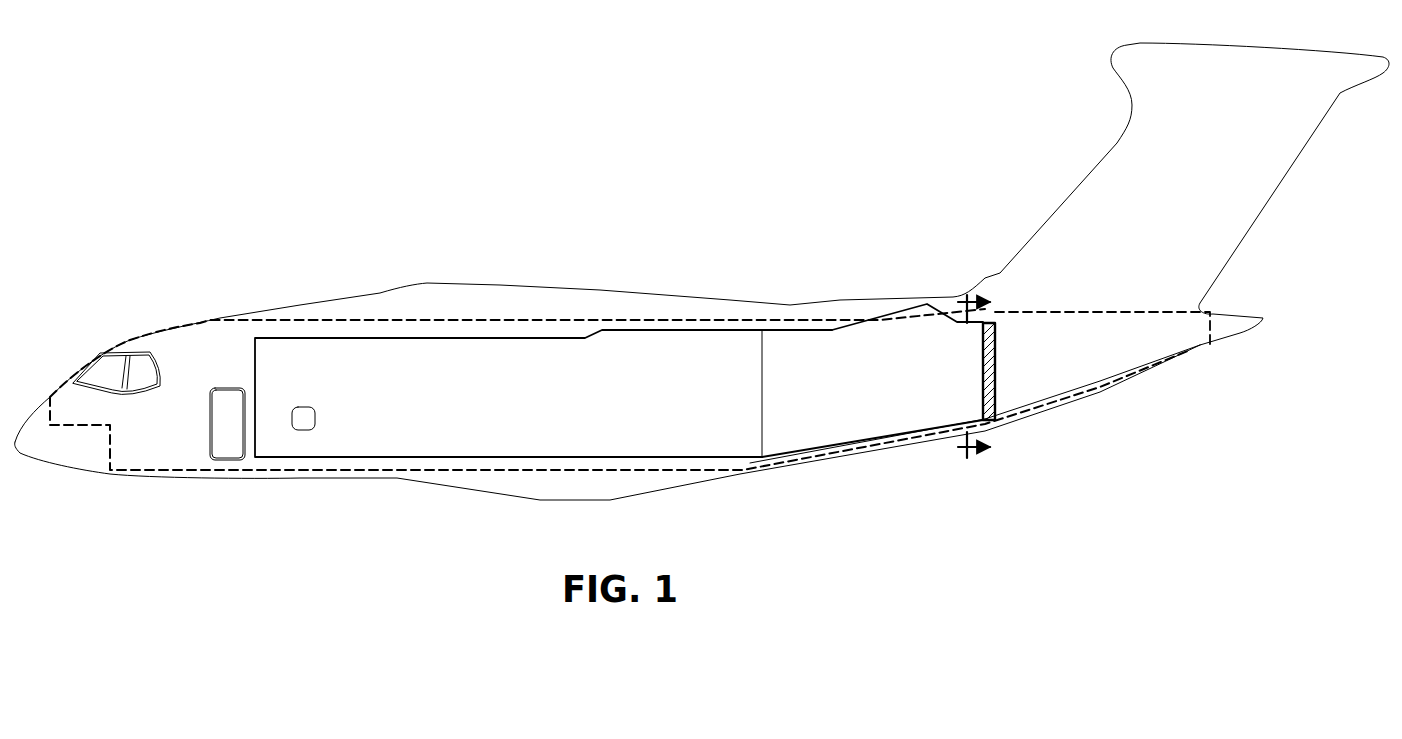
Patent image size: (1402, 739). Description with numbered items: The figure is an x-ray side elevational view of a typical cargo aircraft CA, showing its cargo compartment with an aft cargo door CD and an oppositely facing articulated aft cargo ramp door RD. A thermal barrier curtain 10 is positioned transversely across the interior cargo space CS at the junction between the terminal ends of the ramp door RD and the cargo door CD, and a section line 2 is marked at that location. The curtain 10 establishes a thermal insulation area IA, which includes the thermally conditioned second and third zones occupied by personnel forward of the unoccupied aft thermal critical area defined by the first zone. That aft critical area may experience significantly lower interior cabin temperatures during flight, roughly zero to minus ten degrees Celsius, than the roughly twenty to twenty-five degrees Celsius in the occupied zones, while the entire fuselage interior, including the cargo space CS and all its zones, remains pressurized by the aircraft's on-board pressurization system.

The thermal barrier curtain 10 is at (978, 372).
The section line 2- 2 is at (991, 366).
The cargo aircraft CA is at (697, 208).
The thermal insulation area IA is at (507, 320).
The interior cargo space CS is at (648, 389).
The aft cargo ramp door RD is at (940, 437).
The aft cargo door CD is at (1060, 397).